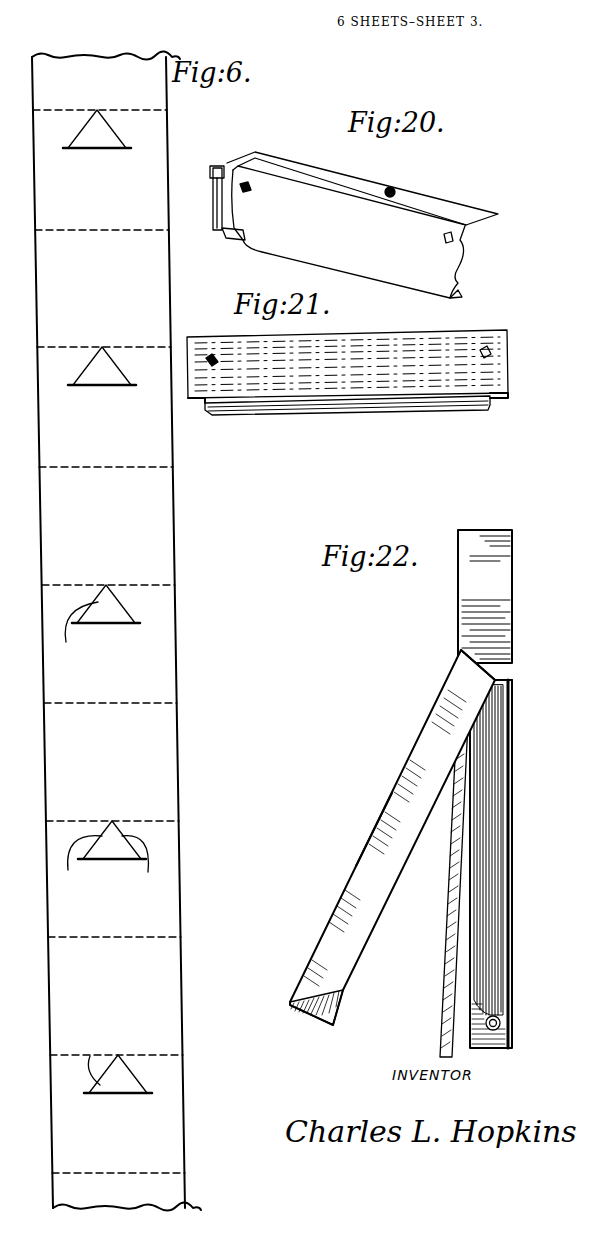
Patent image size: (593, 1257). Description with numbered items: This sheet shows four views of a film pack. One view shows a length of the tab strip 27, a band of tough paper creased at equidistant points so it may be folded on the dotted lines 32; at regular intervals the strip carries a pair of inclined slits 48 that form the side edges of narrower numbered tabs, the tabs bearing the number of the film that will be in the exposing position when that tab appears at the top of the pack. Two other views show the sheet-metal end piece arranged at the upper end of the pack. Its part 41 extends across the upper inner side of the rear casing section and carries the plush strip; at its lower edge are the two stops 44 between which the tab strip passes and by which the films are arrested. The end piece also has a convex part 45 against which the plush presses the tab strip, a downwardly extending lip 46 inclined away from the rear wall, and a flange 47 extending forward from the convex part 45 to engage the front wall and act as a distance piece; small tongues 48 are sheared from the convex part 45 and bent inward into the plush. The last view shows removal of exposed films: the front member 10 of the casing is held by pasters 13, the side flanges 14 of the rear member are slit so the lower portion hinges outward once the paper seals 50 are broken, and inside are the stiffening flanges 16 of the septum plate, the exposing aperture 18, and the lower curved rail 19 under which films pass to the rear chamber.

In FIG. 6, the tab strip 27 is at (162, 516).
In FIG. 6, the fold lines 32 is at (106, 232).
In FIG. 6, the slits / tongues 48 is at (127, 587).
In FIG. 20, the slits / tongues 48 is at (346, 212).
In FIG. 21, the slits / tongues 48 is at (214, 364).
In FIG. 20, the flange 47 is at (316, 170).
In FIG. 20, the convex part 45 is at (460, 262).
In FIG. 21, the convex part 45 is at (377, 362).
In FIG. 20, the rear part of end piece 41 is at (215, 230).
In FIG. 20, the stops 44 is at (236, 240).
In FIG. 21, the stops 44 is at (197, 406).
In FIG. 21, the lip 46 is at (470, 410).
In FIG. 22, the pasters 13 is at (472, 590).
In FIG. 22, the side flanges 14 is at (410, 775).
In FIG. 22, the stiffening flanges 16 is at (488, 735).
In FIG. 22, the paper seals 50 is at (372, 834).
In FIG. 22, the exposing aperture 18 is at (508, 910).
In FIG. 22, the curved rail 19 is at (490, 1050).
In FIG. 22, the front member 10 is at (515, 1022).